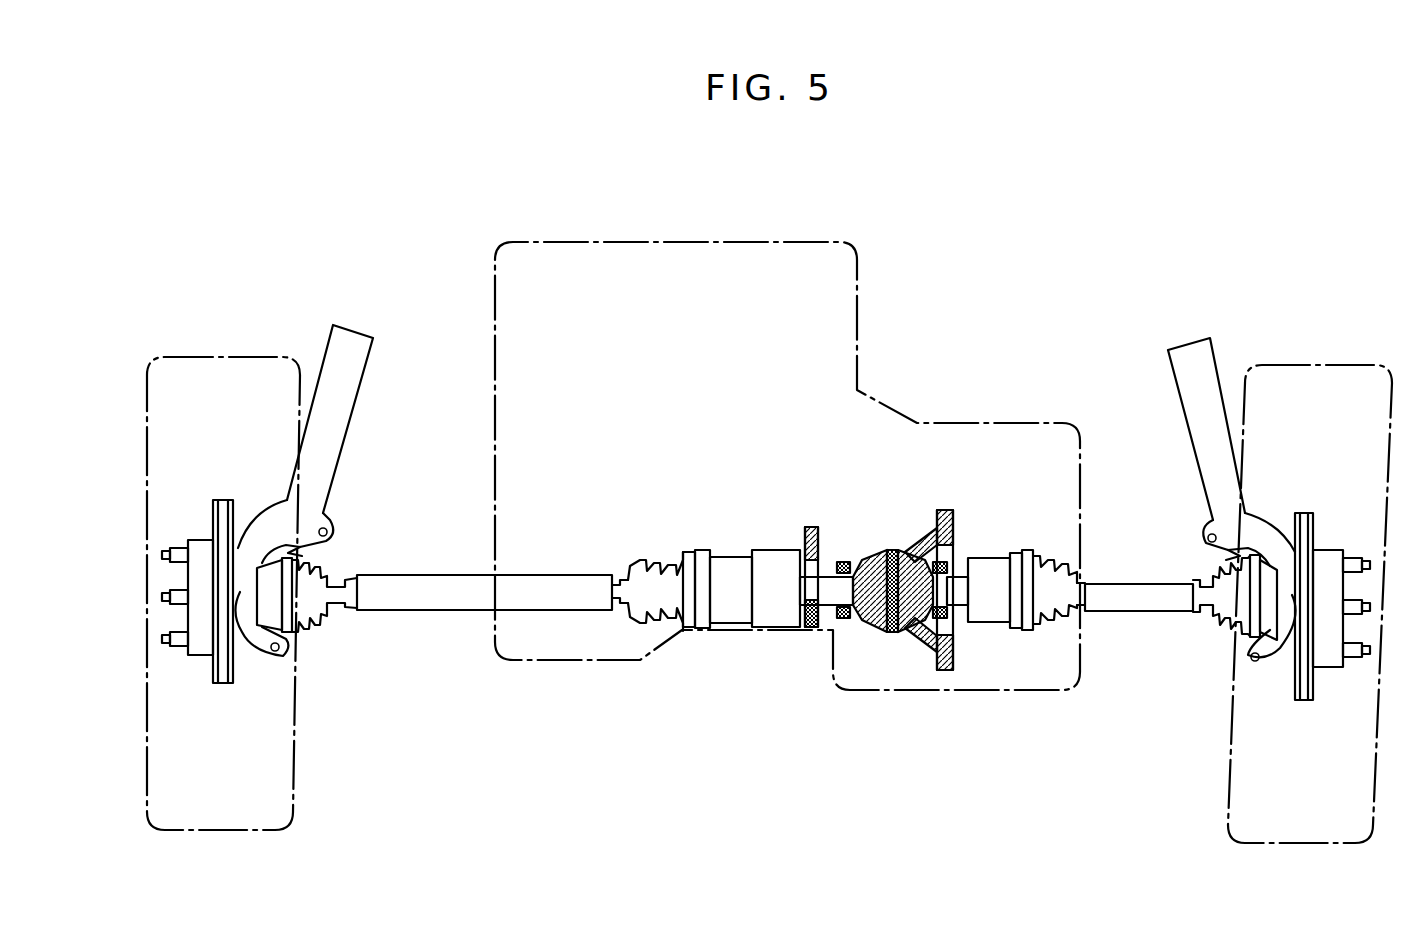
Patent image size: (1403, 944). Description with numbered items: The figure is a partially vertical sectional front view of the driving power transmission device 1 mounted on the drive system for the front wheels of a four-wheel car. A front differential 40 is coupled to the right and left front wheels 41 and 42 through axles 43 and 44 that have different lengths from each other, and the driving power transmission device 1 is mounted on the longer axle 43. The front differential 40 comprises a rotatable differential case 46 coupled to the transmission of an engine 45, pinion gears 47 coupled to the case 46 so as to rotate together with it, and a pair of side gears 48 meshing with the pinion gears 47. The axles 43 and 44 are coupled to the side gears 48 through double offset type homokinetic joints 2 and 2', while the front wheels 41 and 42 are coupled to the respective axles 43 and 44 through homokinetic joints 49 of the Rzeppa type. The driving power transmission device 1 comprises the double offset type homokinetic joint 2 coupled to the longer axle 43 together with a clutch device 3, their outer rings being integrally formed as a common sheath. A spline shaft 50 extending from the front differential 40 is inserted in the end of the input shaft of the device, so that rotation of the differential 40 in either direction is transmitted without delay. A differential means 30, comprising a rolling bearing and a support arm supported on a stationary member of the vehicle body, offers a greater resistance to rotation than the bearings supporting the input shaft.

The driving power transmission device 1 is at (714, 598).
The double offset type homokinetic joint 2 is at (716, 643).
The double offset type homokinetic joint 2' is at (1022, 650).
The clutch device 3 is at (777, 613).
The differential means 30 is at (813, 627).
The front differential 40 is at (921, 532).
The front wheel 41 is at (278, 787).
The front wheel 42 is at (1240, 803).
The axle 43 is at (443, 607).
The axle 44 is at (1122, 597).
The engine 45 is at (718, 258).
The differential case 46 is at (872, 555).
The pinion gear 47 is at (907, 555).
The side gear 48 is at (863, 627).
The homokinetic joint of Rzeppa type 49 is at (322, 607).
The spline shaft 50 is at (813, 587).